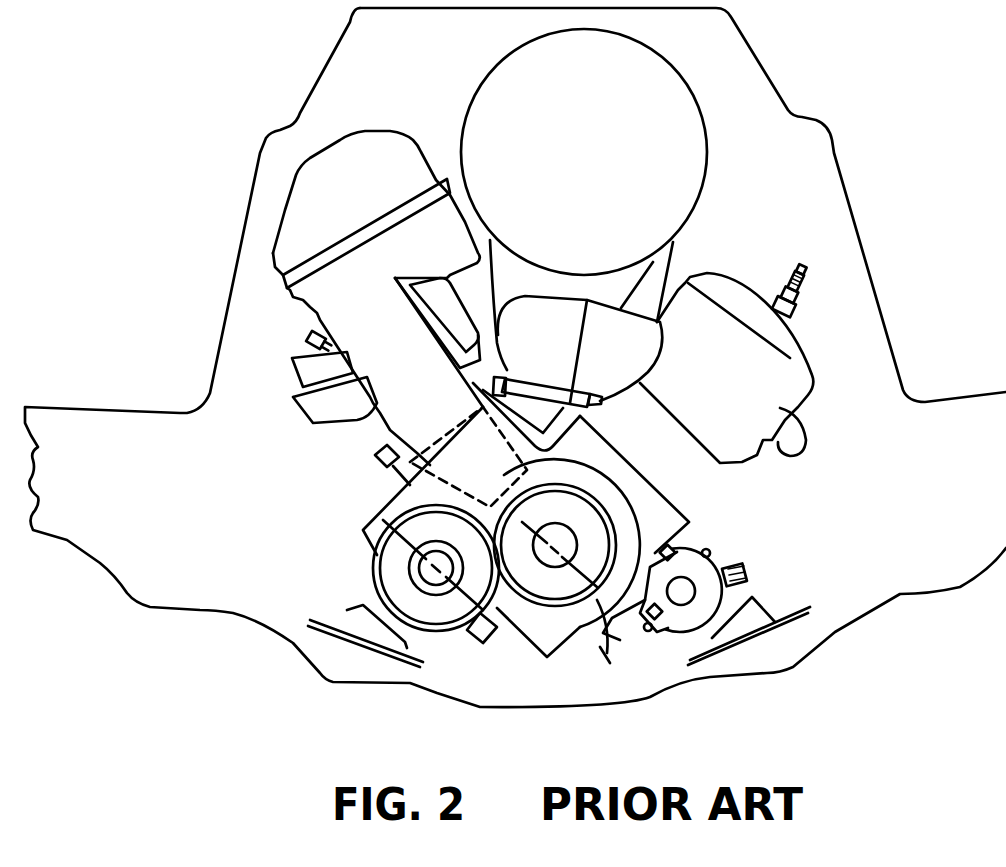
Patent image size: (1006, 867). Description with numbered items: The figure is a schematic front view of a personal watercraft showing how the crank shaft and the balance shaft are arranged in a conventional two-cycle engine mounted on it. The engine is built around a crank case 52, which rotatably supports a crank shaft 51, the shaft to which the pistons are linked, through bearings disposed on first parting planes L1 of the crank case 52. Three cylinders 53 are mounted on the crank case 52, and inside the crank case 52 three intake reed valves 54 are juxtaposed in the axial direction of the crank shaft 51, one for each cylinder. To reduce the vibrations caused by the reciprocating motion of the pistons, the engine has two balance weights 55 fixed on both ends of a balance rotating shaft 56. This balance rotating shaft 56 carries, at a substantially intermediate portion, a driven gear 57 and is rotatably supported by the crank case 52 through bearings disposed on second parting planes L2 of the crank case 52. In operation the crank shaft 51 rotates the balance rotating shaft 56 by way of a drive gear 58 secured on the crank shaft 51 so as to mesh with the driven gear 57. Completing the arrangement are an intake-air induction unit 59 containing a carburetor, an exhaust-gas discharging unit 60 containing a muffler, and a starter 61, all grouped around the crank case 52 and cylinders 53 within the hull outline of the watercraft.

The crank shaft 51 is at (562, 532).
The crank case 52 is at (667, 527).
The cylinders 53 is at (783, 408).
The intake reed valves 54 is at (435, 481).
The balance weights 55 is at (393, 560).
The balance rotating shaft 56 is at (420, 578).
The driven gear 57 is at (440, 633).
The drive gear 58 is at (560, 610).
The intake-air induction unit 59 is at (300, 325).
The exhaust-gas discharging unit 60 is at (685, 247).
The starter 61 is at (750, 566).
The first parting planes L1 is at (607, 657).
The second parting planes L2 is at (483, 645).